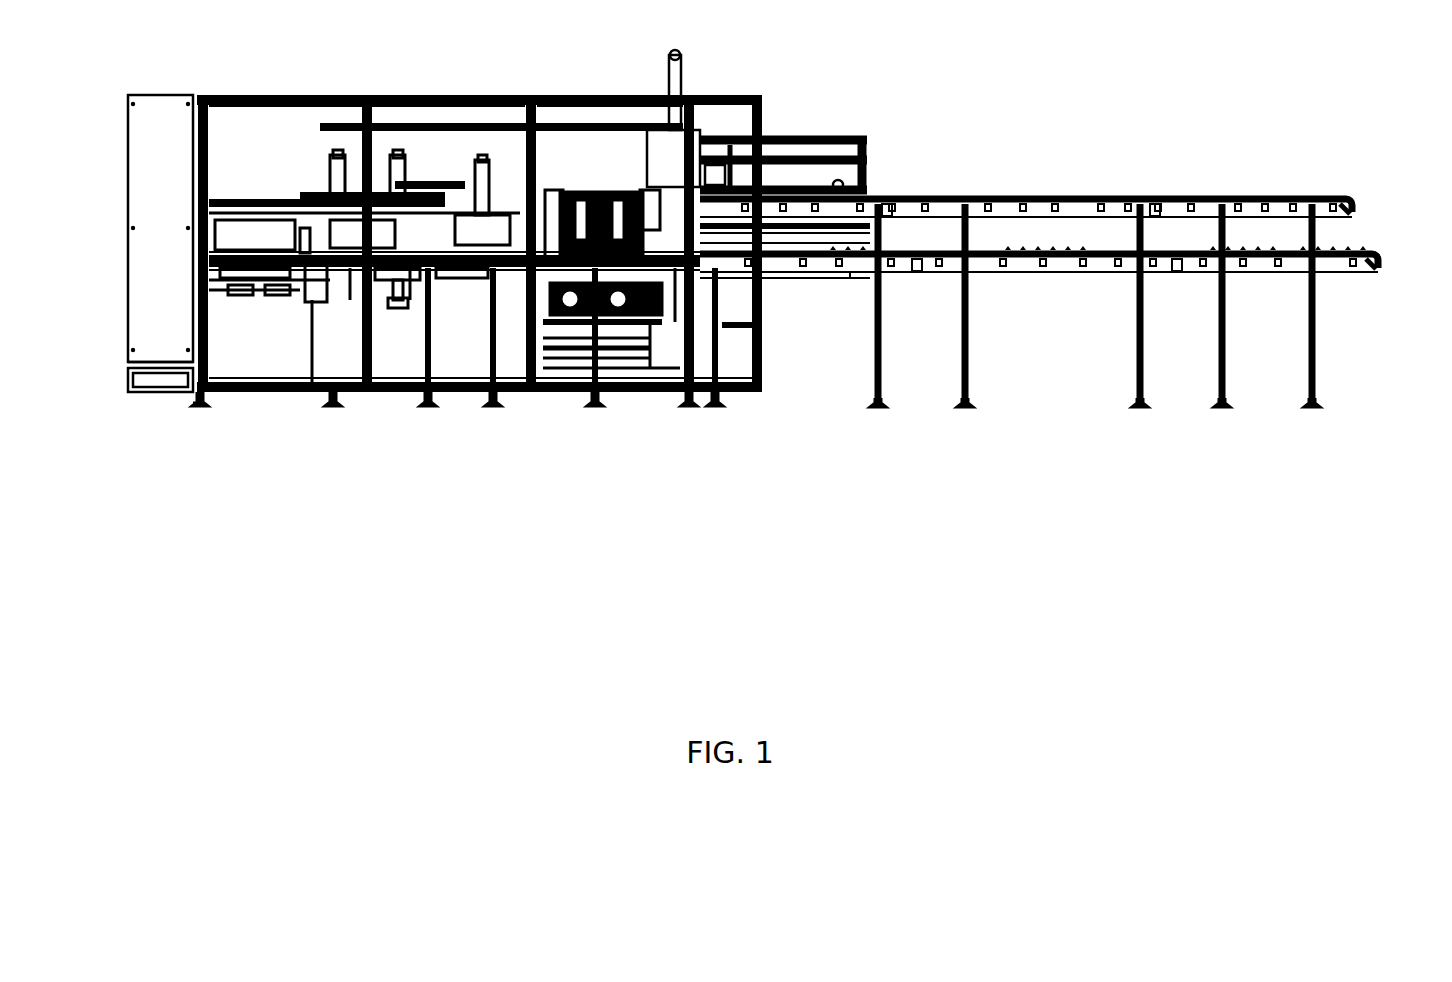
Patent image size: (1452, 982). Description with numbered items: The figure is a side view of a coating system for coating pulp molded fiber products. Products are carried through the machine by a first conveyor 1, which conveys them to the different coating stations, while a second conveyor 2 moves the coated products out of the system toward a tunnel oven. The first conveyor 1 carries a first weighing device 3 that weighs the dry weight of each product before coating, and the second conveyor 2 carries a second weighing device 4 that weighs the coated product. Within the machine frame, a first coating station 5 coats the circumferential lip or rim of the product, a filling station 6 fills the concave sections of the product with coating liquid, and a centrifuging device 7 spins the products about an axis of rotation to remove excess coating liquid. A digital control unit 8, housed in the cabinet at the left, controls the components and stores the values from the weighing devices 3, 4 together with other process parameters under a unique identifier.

The first conveyor 1 is at (1072, 196).
The second conveyor 2 is at (1048, 272).
The first weighing device 3 is at (818, 192).
The second weighing device 4 is at (797, 272).
The first coating station 5 is at (383, 287).
The filling station 6 is at (470, 282).
The centrifuging device 7 is at (598, 190).
The digital control unit 8 is at (156, 196).